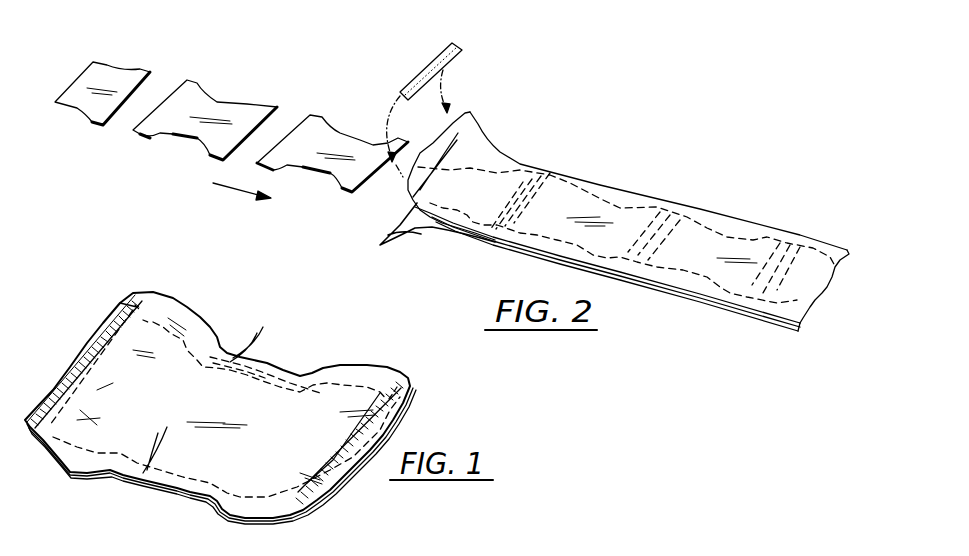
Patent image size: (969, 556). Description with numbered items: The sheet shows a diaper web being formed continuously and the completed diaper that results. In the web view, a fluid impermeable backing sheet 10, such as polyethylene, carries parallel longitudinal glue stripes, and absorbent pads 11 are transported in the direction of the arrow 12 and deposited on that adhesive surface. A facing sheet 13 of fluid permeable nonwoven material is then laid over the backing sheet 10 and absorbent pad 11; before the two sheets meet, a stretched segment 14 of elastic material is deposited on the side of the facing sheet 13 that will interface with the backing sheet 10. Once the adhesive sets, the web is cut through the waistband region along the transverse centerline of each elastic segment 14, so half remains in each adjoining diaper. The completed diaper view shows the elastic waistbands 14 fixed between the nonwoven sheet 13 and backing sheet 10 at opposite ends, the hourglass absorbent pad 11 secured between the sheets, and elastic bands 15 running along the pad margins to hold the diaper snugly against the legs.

In FIG. 2, the backing sheet 10 is at (385, 231).
In FIG. 1, the backing sheet 10 is at (65, 473).
In FIG. 2, the absorbent pad 11 is at (313, 113).
In FIG. 1, the absorbent pad 11 is at (190, 316).
In FIG. 2, the arrow 12 is at (232, 195).
In FIG. 2, the facing sheet 13 is at (470, 113).
In FIG. 1, the facing sheet 13 is at (237, 423).
In FIG. 2, the segment of elastic material 14 is at (431, 63).
In FIG. 1, the segment of elastic material 14 is at (168, 304).
In FIG. 1, the elastic bands 15 is at (199, 394).